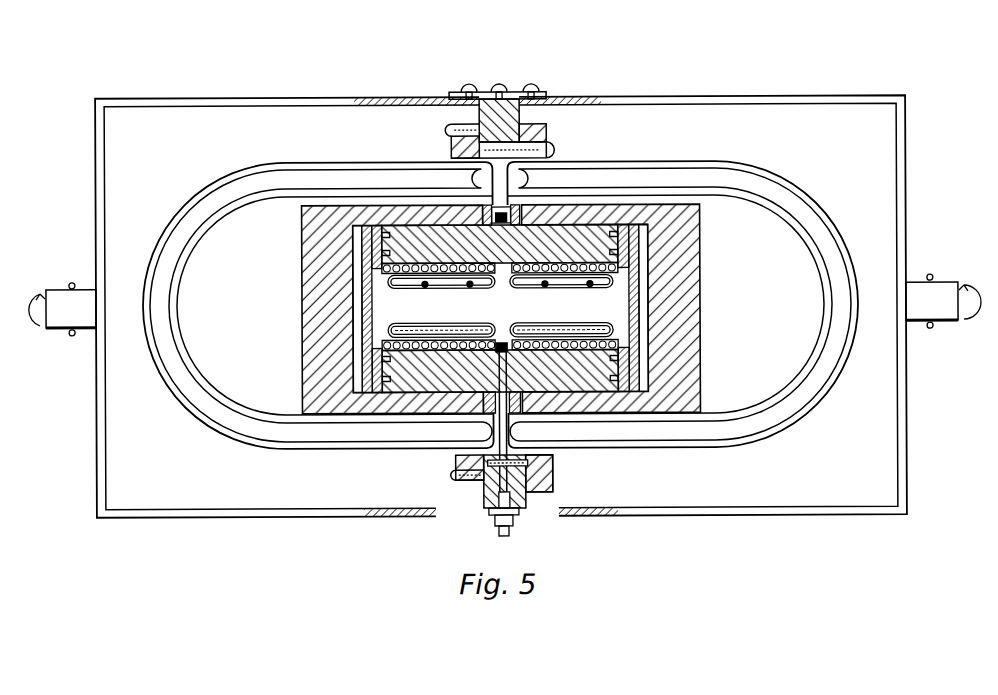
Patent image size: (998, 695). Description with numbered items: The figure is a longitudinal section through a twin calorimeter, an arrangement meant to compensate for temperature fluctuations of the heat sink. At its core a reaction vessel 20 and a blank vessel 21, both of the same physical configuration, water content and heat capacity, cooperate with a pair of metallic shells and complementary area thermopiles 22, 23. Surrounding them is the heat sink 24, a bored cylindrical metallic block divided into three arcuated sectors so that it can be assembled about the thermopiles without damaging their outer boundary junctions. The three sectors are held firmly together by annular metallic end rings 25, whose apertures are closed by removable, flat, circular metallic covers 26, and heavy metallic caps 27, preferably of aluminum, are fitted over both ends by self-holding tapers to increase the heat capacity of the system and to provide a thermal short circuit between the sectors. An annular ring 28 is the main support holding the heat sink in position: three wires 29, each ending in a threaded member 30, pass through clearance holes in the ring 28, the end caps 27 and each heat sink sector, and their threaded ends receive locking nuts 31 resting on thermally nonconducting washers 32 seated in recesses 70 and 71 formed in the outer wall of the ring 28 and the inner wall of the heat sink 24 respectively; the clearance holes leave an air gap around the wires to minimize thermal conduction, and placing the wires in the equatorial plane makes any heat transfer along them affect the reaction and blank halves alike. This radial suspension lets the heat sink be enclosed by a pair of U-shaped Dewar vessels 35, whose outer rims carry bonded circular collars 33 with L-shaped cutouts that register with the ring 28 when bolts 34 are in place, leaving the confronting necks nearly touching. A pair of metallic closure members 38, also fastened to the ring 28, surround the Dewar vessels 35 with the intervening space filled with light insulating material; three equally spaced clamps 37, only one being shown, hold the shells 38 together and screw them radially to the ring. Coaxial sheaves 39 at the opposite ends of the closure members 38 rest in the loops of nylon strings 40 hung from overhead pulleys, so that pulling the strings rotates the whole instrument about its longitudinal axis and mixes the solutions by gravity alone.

The reaction vessel 20 is at (433, 285).
The blank vessel 21 is at (552, 285).
The metallic shell and area thermopile 22 is at (384, 276).
The metallic shell and area thermopile 23 is at (618, 276).
The heat sink 24 is at (498, 240).
The end ring 25 is at (376, 233).
The cover 26 is at (368, 393).
The cap 27 is at (320, 310).
The ring 28 is at (521, 112).
The wire 29 is at (510, 420).
The threaded member 30 is at (500, 538).
The locking nut 31 is at (494, 524).
The washer 32 is at (518, 520).
The collar 33 is at (452, 149).
The bolt 34 is at (455, 484).
The Dewar vessel 35 is at (180, 398).
The clamp 37 is at (540, 92).
The closure member 38 is at (316, 98).
The sheave 39 is at (74, 333).
The nylon string 40 is at (70, 280).
The recess 70 is at (498, 508).
The recess 71 is at (500, 353).